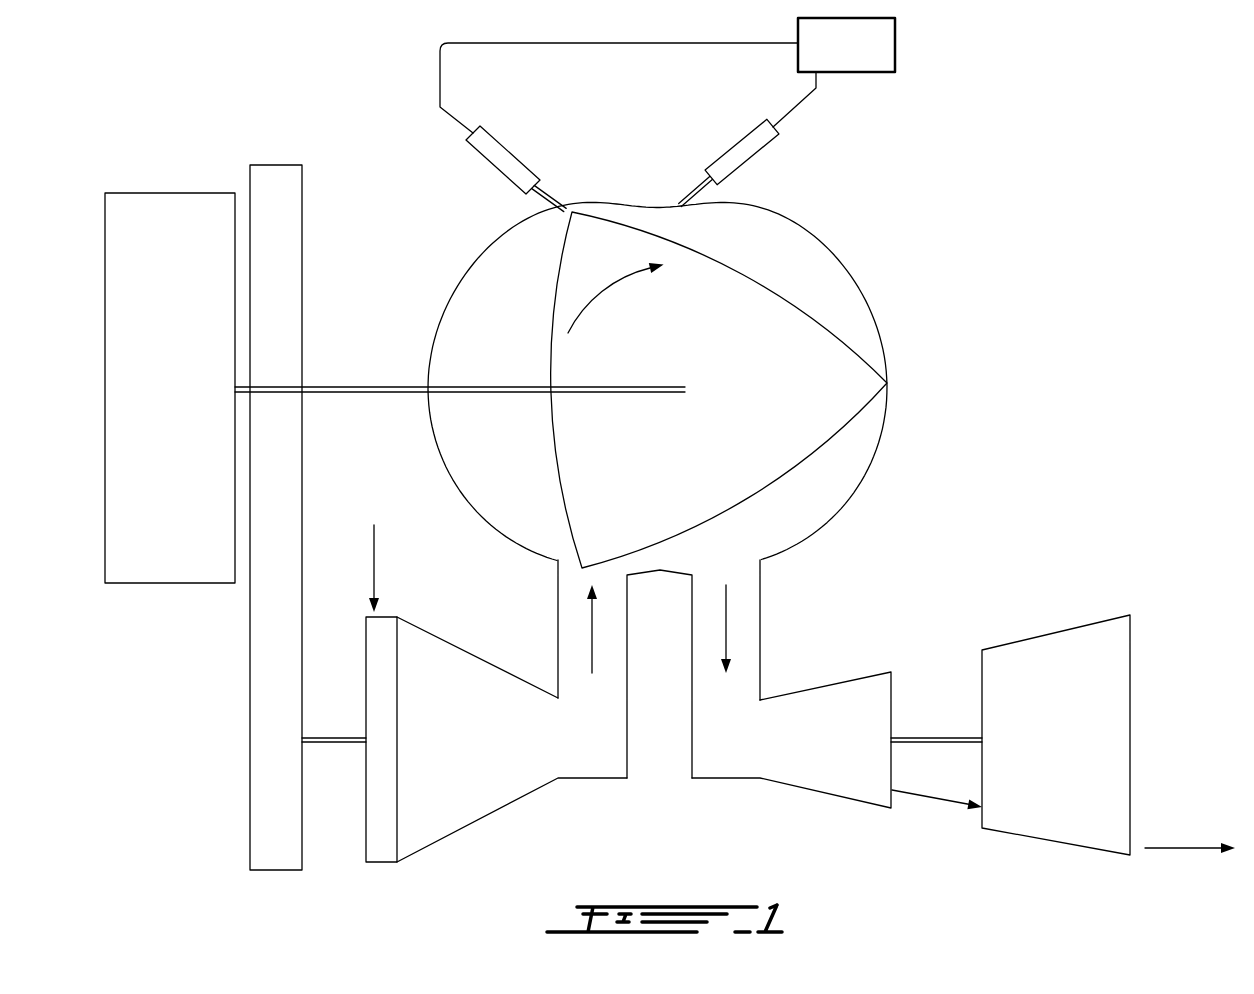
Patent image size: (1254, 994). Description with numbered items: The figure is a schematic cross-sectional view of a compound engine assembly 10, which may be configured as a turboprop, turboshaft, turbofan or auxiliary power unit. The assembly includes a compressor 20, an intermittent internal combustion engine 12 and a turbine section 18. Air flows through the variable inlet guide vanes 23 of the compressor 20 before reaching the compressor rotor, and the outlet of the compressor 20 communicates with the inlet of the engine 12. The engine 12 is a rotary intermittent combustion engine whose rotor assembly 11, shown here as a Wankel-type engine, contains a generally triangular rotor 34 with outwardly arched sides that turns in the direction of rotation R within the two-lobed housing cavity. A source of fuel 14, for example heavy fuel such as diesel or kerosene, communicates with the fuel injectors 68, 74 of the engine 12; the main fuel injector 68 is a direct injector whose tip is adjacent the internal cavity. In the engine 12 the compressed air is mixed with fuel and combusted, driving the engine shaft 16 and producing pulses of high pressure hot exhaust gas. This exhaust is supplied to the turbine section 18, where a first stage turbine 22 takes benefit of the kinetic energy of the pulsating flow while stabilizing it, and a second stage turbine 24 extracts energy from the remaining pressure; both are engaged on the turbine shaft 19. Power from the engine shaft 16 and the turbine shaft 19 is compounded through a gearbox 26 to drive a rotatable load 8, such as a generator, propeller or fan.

The rotatable load 8 is at (174, 200).
The compound engine assembly 10 is at (1010, 142).
The rotor assembly 11 is at (620, 201).
The intermittent internal combustion engine 12 is at (657, 381).
The source of fuel 14 is at (846, 45).
The engine shaft 16 is at (371, 387).
The turbine section 18 is at (937, 597).
The turbine shaft 19 is at (332, 752).
The compressor 20 is at (484, 792).
The first stage turbine 22 is at (830, 778).
The variable inlet guide vanes 23 is at (384, 842).
The second stage turbine 24 is at (1050, 818).
The gearbox 26 is at (274, 182).
The rotor 34 is at (828, 330).
The main fuel injector 68 is at (499, 153).
The fuel injector 74 is at (735, 153).
The direction of rotation R is at (602, 290).